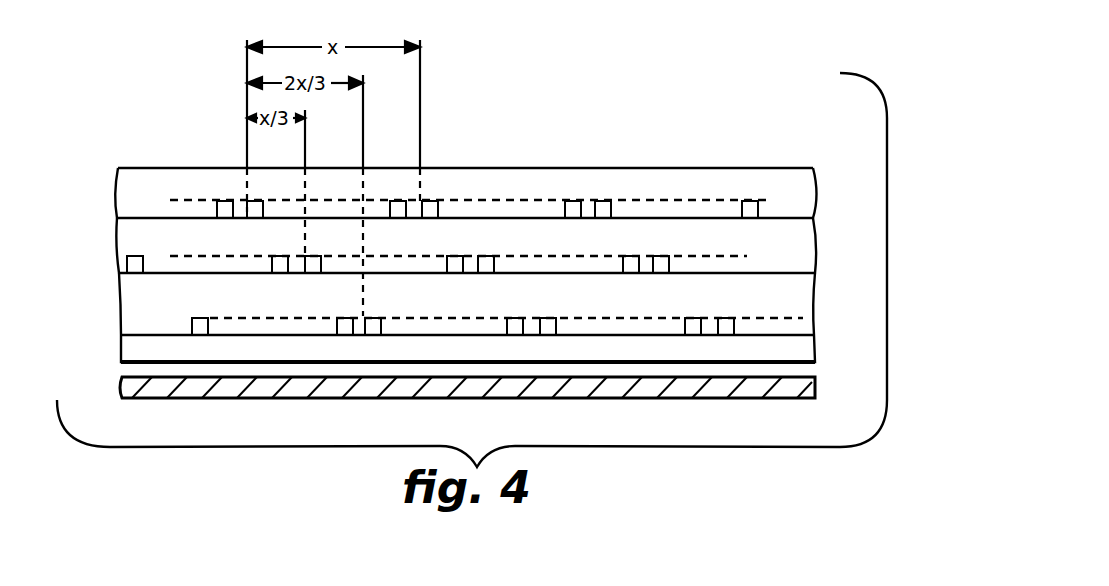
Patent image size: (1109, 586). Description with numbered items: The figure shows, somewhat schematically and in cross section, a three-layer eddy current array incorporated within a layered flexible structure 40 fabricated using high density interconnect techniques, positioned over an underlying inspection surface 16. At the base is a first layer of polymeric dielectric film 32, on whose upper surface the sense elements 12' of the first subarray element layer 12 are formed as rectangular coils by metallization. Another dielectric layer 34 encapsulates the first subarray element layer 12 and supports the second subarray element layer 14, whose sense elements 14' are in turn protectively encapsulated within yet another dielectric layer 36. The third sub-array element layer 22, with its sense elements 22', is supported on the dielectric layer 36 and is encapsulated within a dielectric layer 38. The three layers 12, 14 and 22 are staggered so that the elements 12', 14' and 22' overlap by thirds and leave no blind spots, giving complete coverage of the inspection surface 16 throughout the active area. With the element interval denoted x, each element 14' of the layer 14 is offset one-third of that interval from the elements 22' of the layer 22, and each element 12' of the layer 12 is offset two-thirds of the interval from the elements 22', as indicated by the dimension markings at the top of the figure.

The first subarray element layer 12 is at (430, 364).
The sense elements 12' is at (397, 315).
The second subarray element layer 14 is at (409, 232).
The sense elements 14' is at (449, 204).
The inspection surface 16 is at (265, 390).
The third subarray element layer 22 is at (423, 159).
The sense elements 22' is at (487, 154).
The polymeric dielectric film 32 is at (812, 355).
The dielectric layer 34 is at (812, 300).
The dielectric layer 36 is at (815, 238).
The dielectric layer 38 is at (805, 186).
The layered flexible structure 40 is at (797, 135).